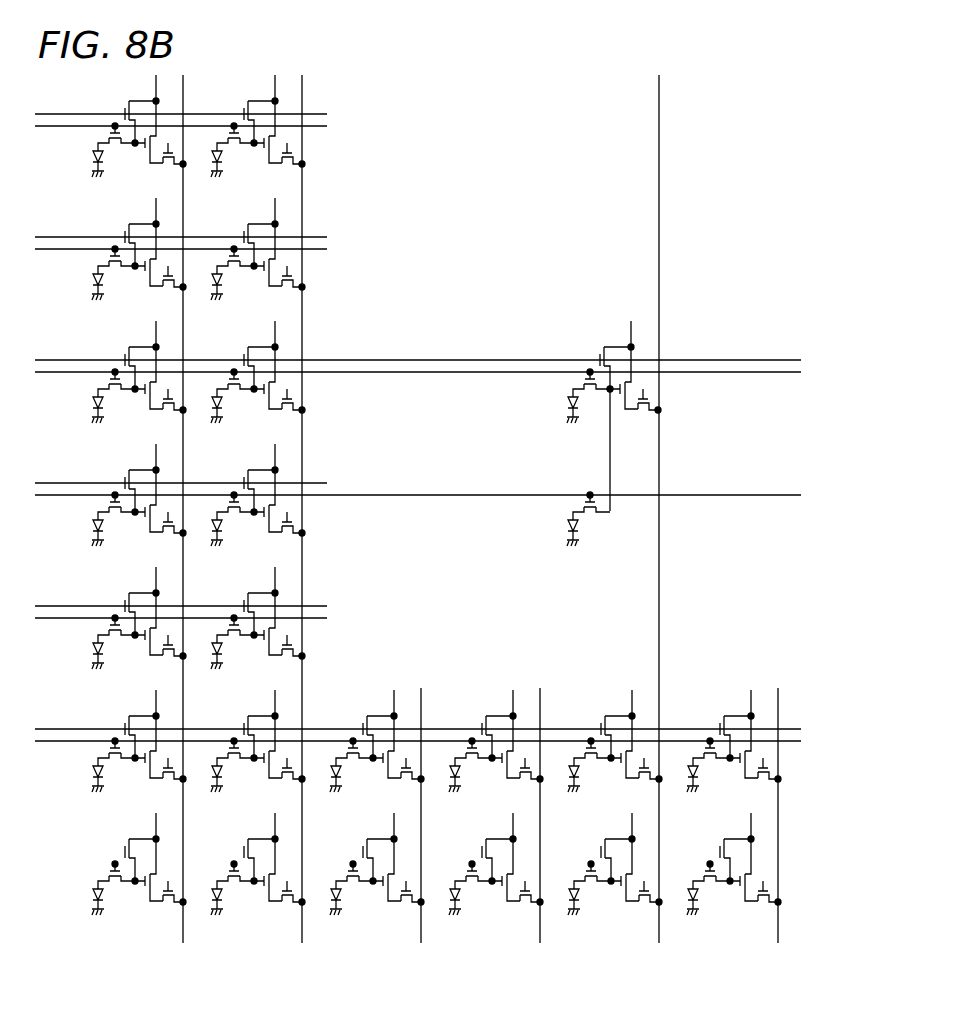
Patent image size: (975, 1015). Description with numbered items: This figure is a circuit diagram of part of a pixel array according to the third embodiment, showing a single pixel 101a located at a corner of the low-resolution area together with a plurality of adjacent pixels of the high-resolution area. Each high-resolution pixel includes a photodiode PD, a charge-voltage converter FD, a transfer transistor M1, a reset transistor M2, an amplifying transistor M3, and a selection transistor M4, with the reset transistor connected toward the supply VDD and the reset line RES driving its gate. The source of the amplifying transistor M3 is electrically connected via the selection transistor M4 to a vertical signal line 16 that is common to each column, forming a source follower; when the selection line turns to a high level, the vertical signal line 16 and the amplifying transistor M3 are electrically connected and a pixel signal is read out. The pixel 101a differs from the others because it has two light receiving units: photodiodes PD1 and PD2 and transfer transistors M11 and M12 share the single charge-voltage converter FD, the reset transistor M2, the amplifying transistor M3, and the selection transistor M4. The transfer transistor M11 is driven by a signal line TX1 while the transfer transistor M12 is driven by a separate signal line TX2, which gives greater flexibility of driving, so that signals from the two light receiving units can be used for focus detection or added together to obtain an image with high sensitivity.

The vertical signal line 16 is at (660, 617).
The pixel 101a is at (573, 493).
The transfer transistor M1 is at (111, 879).
The reset transistor M2 is at (125, 846).
The amplifying transistor M3 is at (146, 891).
The selection transistor M4 is at (173, 906).
The transfer transistor M11 is at (585, 378).
The transfer transistor M12 is at (592, 511).
The photodiode PD is at (94, 893).
The photodiode PD1 is at (568, 402).
The photodiode PD2 is at (568, 524).
The charge-voltage converter FD is at (136, 884).
The power supply VDD is at (394, 585).
The reset signal line RES is at (801, 342).
The signal line TX1 is at (801, 388).
The signal line TX2 is at (801, 474).